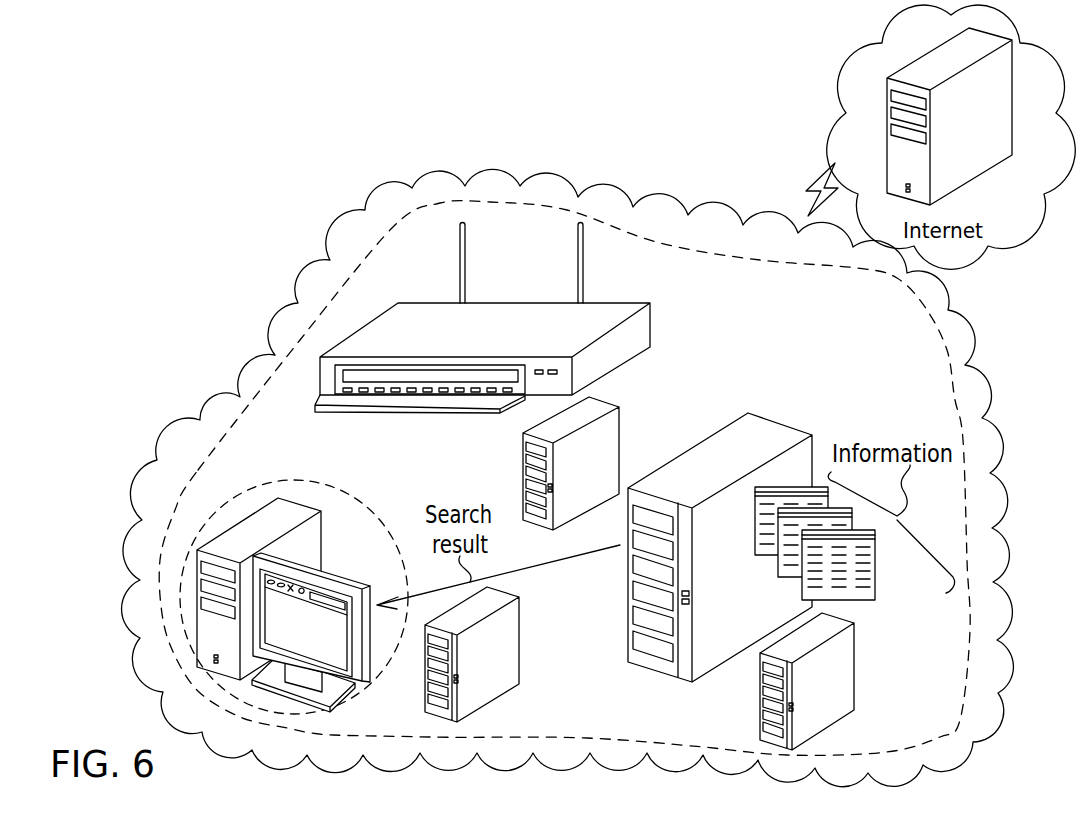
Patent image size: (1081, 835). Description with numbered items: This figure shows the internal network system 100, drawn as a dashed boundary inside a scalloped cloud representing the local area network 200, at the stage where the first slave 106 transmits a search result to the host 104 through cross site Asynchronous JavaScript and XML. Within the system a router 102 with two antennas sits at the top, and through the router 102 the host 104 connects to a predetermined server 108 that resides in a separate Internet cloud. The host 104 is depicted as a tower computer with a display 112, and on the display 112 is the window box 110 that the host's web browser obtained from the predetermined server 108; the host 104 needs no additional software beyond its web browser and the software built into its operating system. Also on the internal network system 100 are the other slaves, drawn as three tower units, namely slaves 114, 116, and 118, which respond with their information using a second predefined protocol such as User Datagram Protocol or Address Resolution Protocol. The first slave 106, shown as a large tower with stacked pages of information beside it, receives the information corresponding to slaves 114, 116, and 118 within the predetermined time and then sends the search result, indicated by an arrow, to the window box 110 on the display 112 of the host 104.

The internal network system 100 is at (953, 395).
The local area network 200 is at (958, 312).
The router 102 is at (512, 303).
The host 104 is at (297, 575).
The first slave 106 is at (800, 422).
The predetermined server 108 is at (887, 100).
The window box 110 is at (350, 593).
The display 112 is at (340, 578).
The slave 114 is at (497, 697).
The slave 116 is at (760, 713).
The slave 118 is at (617, 422).